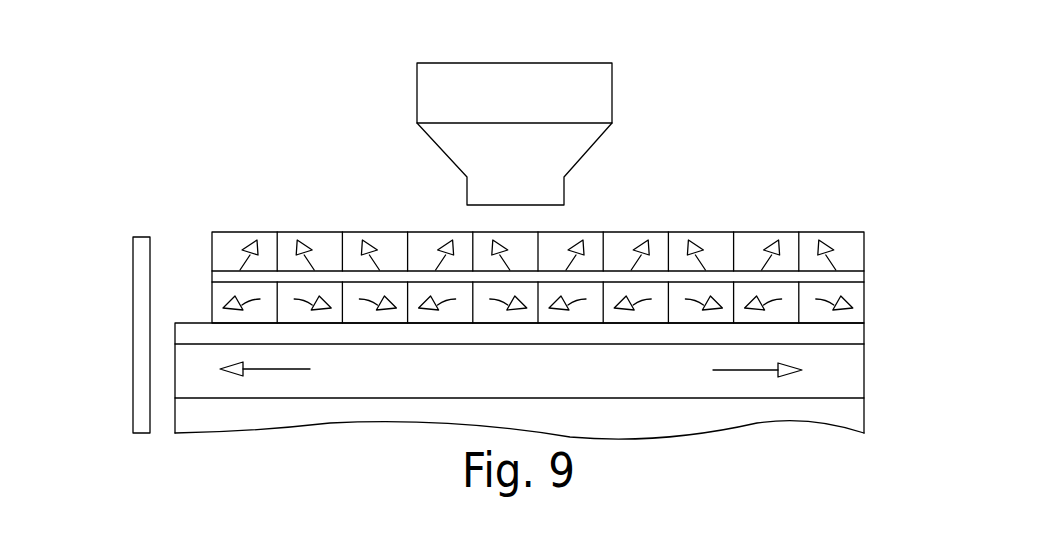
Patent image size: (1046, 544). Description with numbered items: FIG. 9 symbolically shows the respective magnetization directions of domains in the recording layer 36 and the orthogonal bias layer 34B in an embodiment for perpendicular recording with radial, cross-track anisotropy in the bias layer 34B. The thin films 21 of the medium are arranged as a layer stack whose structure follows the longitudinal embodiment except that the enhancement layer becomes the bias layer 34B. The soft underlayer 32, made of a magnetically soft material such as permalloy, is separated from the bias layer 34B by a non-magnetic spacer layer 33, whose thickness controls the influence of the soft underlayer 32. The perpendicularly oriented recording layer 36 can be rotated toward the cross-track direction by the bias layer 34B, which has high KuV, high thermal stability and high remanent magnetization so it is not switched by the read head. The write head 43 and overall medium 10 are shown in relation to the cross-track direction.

The magnetic recording system 10 is at (758, 113).
The thin films 21 is at (133, 335).
The soft underlayer 32 is at (855, 371).
The non-magnetic spacer layer 33 is at (192, 330).
The bias layer 34B is at (860, 298).
The recording layer 36 is at (855, 257).
The write pole 43 is at (600, 85).